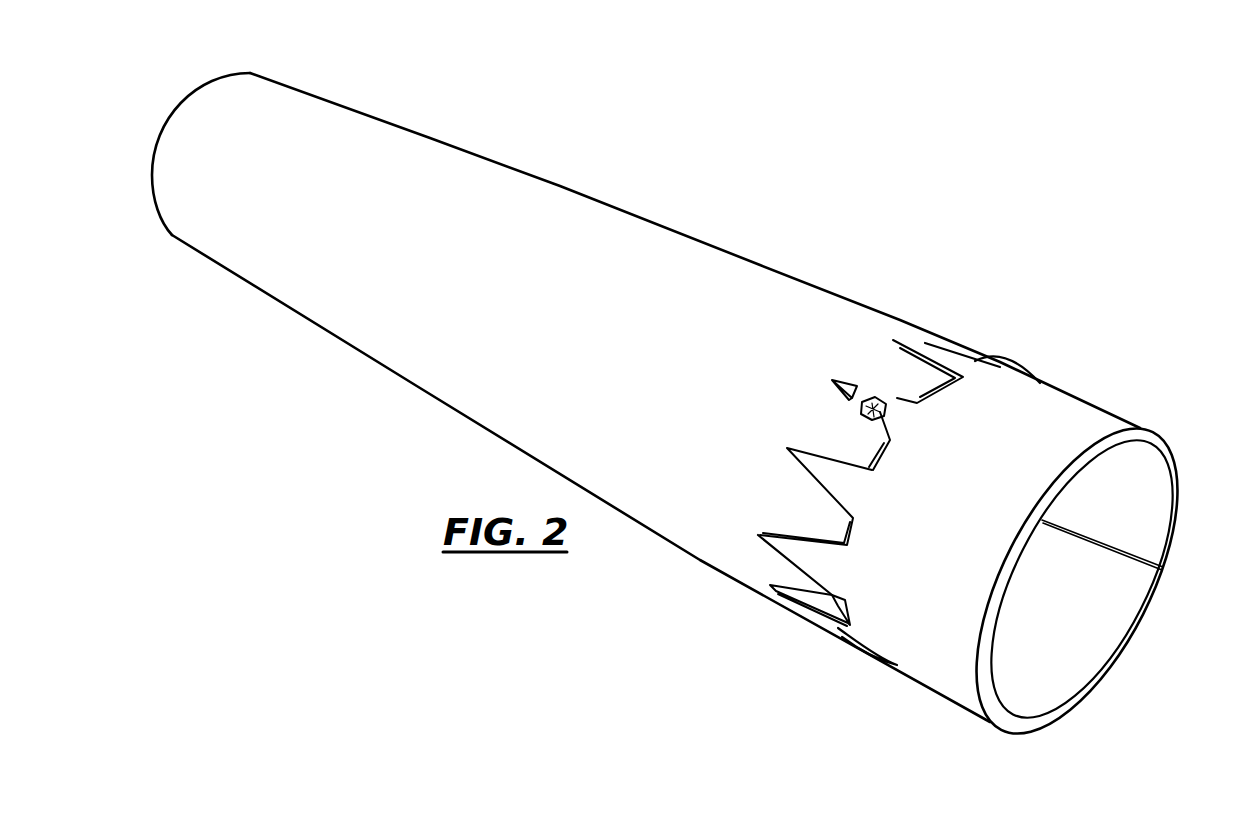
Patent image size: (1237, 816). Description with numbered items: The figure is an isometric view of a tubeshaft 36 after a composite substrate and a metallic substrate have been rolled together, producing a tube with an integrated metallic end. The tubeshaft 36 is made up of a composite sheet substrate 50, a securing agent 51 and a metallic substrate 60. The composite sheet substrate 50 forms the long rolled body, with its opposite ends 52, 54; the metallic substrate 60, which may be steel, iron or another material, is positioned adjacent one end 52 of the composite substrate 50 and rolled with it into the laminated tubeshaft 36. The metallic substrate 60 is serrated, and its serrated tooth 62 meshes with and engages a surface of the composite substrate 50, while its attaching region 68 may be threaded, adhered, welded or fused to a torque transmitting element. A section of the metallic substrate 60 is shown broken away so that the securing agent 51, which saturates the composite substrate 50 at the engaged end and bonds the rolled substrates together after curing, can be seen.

The tubeshaft 36 is at (824, 108).
The composite sheet substrate 50 is at (640, 236).
The securing agent 51 is at (882, 400).
The end of the composite substrate 52 is at (978, 356).
The end of the composite substrate 54 is at (233, 89).
The metallic substrate 60 is at (1115, 427).
The serrated tooth 62 is at (837, 380).
The torque transmitting element attaching region 68 is at (927, 662).